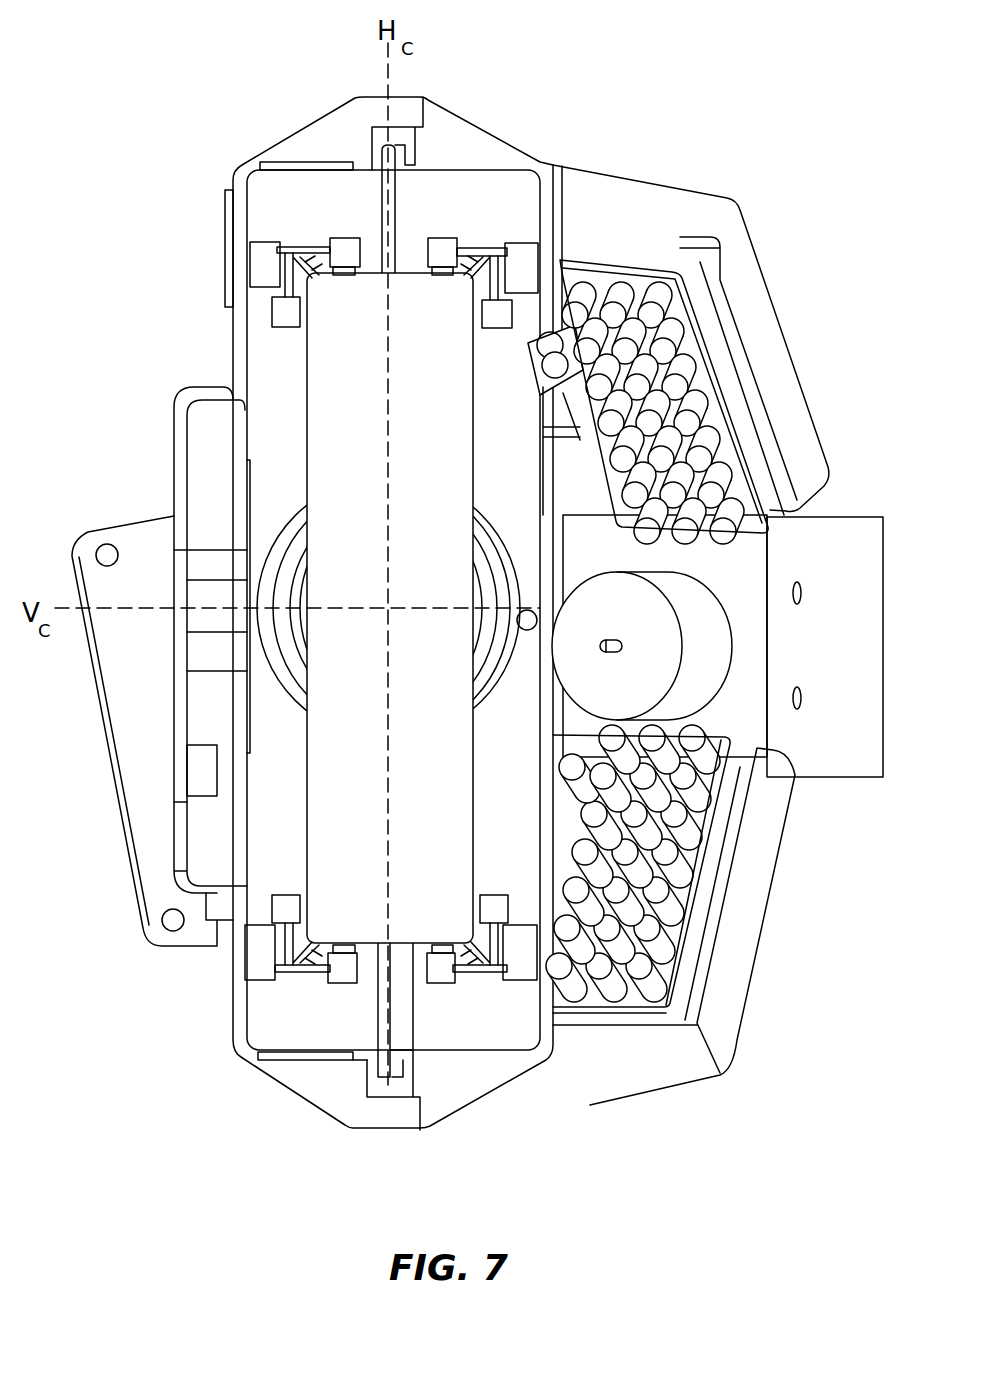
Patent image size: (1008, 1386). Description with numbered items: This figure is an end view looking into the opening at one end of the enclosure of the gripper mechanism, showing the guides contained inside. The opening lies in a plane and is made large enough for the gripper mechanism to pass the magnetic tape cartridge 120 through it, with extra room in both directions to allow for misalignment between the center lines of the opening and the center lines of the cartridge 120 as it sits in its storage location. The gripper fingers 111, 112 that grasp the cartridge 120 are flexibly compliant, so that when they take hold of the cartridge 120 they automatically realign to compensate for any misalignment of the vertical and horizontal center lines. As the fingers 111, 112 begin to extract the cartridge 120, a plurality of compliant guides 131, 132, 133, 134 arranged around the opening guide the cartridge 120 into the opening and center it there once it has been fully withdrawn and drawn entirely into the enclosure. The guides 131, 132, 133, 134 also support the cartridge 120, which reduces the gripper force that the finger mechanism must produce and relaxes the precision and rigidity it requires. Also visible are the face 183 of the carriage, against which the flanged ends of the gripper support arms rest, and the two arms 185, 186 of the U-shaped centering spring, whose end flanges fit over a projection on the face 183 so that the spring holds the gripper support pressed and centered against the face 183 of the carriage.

The gripper finger 111 is at (303, 535).
The gripper finger 112 is at (490, 535).
The magnetic tape cartridge 120 is at (328, 368).
The compliant guide 131 is at (313, 245).
The compliant guide 132 is at (310, 977).
The compliant guide 133 is at (473, 237).
The compliant guide 134 is at (472, 975).
The face of carriage 183 is at (730, 447).
The arm of centering spring 185 is at (748, 288).
The arm of centering spring 186 is at (738, 923).